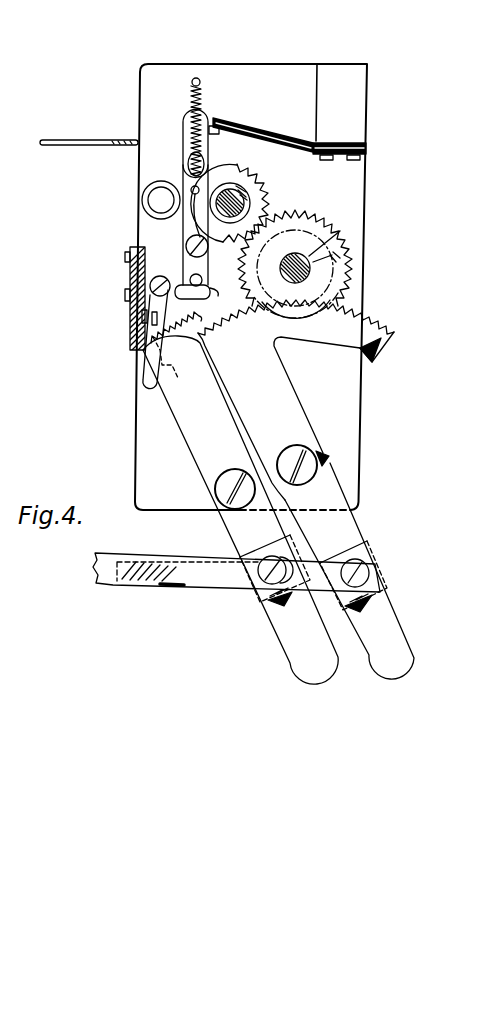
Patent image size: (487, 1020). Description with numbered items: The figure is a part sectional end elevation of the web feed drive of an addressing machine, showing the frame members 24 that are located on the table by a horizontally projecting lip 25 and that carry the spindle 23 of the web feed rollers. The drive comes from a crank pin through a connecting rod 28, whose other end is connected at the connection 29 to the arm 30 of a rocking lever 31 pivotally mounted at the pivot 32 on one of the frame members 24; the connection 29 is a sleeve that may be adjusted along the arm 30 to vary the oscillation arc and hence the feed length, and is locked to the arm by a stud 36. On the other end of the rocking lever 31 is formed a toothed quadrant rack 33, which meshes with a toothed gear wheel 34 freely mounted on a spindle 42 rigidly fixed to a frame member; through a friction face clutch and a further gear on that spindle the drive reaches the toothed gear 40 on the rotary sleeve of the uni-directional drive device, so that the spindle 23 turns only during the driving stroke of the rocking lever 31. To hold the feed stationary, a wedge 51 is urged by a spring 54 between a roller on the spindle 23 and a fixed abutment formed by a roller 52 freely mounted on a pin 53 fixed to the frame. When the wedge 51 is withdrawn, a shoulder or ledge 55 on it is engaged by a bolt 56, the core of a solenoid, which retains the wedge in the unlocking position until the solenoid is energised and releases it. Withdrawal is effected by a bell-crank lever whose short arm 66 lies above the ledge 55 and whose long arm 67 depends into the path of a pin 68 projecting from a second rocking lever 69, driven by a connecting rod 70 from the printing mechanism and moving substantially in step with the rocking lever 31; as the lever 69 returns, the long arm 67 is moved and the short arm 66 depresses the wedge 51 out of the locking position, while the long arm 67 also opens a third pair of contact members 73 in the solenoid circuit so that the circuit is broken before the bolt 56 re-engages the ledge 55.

The spindle 23 is at (246, 205).
The frame members 24 is at (288, 58).
The horizontally projecting lip 25 is at (85, 140).
The connecting rod 28 is at (158, 588).
The connection 29 is at (377, 591).
The arm 30 is at (409, 653).
The rocking lever 31 is at (326, 498).
The pivot 32 is at (318, 465).
The toothed quadrant rack 33 is at (392, 334).
The toothed gear wheel 34 is at (336, 277).
The stud 36 is at (370, 572).
The toothed gear 40 is at (265, 194).
The spindle 42 is at (293, 138).
The wedge 51 is at (185, 149).
The roller 52 is at (143, 191).
The pin 53 is at (152, 201).
The spring 54 is at (198, 100).
The shoulder or ledge 55 is at (284, 276).
The bolt 56 is at (201, 280).
The short arm 66 is at (175, 263).
The long arm 67 is at (143, 382).
The pin 68 is at (171, 369).
The second rocking lever 69 is at (300, 632).
The connecting rod 70 is at (152, 554).
The third pair of contact members 73 is at (137, 333).